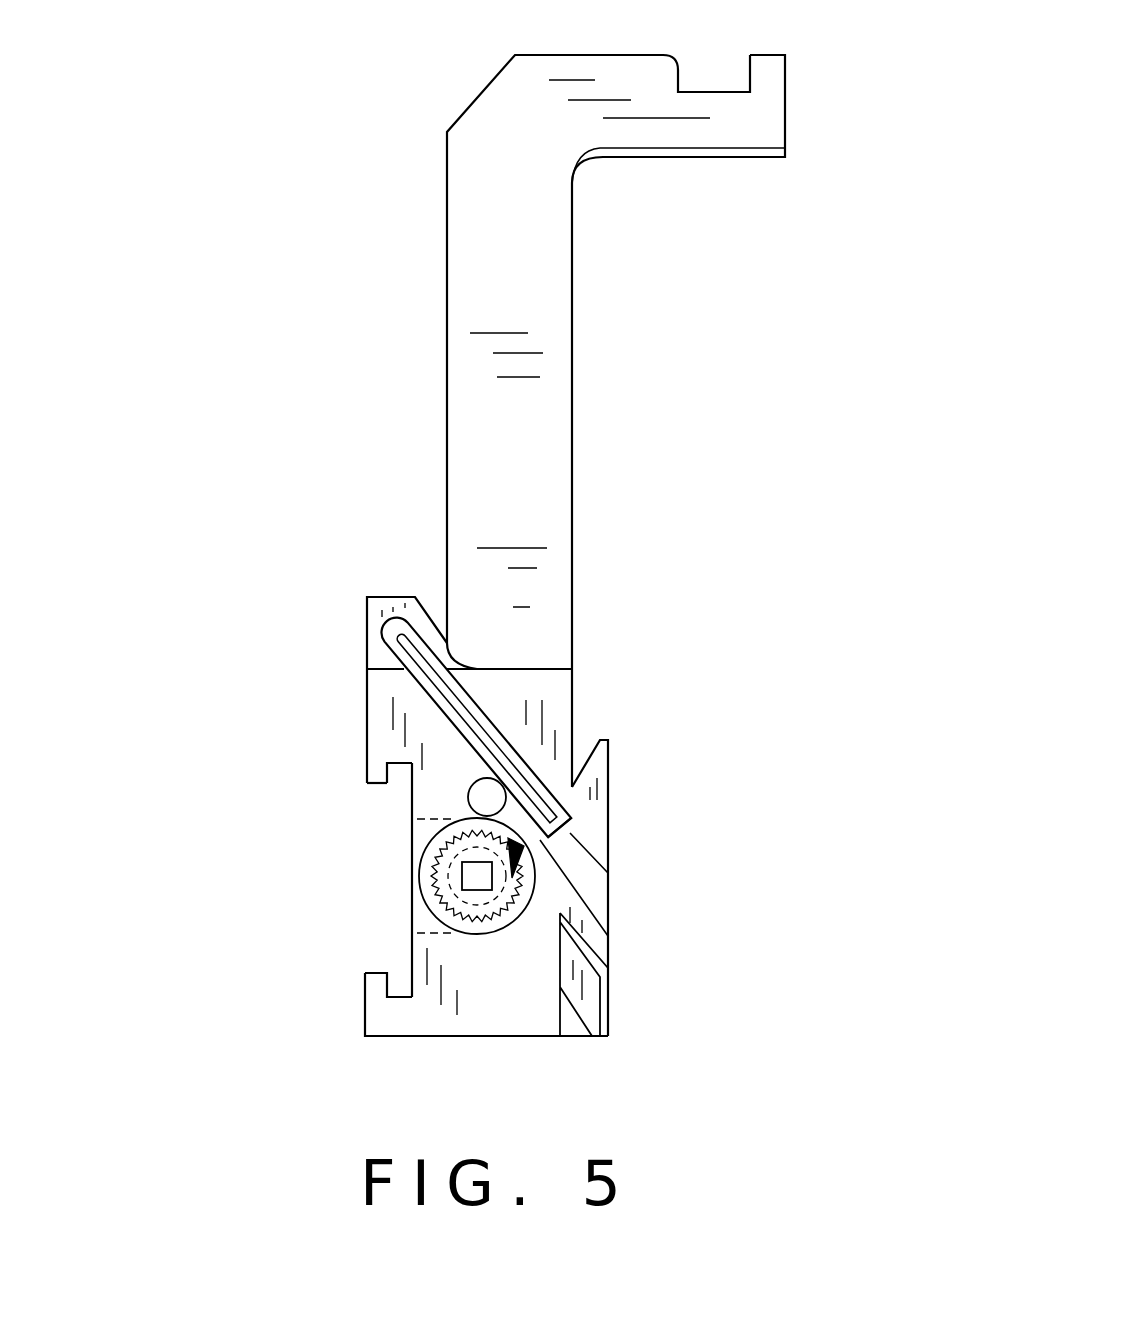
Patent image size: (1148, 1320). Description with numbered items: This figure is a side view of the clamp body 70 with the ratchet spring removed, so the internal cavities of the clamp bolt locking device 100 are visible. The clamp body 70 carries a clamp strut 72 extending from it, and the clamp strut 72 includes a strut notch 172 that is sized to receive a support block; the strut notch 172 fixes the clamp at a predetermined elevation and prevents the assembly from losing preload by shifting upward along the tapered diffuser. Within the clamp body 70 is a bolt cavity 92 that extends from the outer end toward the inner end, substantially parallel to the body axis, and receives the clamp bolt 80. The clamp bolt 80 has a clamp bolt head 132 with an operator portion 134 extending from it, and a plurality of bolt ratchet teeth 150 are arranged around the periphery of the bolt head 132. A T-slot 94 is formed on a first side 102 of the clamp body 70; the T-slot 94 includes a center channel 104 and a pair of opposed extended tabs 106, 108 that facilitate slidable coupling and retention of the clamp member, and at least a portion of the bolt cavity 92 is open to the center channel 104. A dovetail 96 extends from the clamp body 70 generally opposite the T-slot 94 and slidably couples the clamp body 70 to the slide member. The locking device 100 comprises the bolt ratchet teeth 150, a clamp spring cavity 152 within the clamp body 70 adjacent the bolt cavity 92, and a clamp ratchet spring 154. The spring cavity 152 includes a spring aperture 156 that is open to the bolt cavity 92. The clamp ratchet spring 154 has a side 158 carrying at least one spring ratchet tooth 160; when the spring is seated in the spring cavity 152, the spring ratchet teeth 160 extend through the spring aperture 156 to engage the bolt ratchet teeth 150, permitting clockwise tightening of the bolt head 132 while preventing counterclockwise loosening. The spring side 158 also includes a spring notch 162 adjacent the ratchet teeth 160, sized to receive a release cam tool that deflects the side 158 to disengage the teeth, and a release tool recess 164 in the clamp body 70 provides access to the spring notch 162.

The clamp body 70 is at (517, 702).
The clamp strut 72 is at (542, 410).
The clamp bolt 80 is at (480, 948).
The bolt cavity 92 is at (490, 900).
The T-slot 94 is at (393, 955).
The dovetail 96 is at (590, 826).
The locking device 100 is at (650, 872).
The first side 102 is at (367, 760).
The center channel 104 is at (418, 880).
The extended tab 106 is at (365, 978).
The extended tab 108 is at (375, 790).
The clamp bolt head 132 is at (440, 892).
The operator portion 134 is at (462, 868).
The bolt ratchet teeth 150 is at (527, 888).
The clamp spring cavity 152 is at (470, 747).
The clamp ratchet spring 154 is at (403, 742).
The spring aperture 156 is at (515, 845).
The spring side 158 is at (403, 742).
The spring ratchet tooth 160 is at (508, 888).
The spring notch 162 is at (468, 810).
The release tool recess 164 is at (505, 787).
The strut notch 172 is at (707, 92).